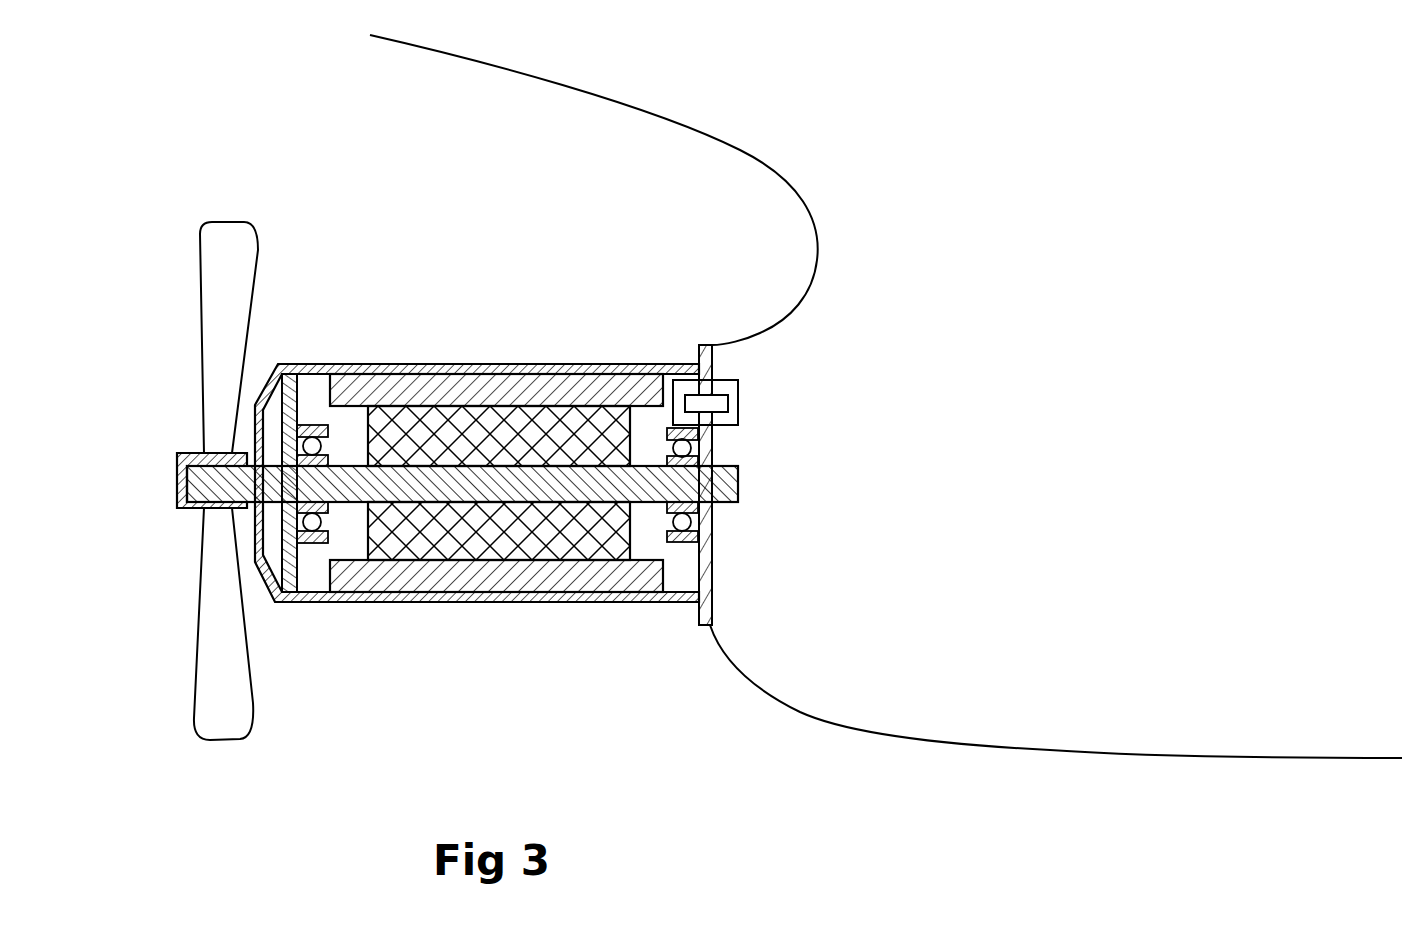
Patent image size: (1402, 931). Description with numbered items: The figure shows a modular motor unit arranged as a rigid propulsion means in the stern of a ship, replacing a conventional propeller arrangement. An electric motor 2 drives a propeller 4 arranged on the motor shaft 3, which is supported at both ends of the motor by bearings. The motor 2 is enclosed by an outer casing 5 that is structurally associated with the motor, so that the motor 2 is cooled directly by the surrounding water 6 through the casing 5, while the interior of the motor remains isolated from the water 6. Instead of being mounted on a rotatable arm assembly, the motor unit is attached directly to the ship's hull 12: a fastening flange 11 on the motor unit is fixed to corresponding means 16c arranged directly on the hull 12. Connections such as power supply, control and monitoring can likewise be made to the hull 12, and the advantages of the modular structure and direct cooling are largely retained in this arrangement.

The electric motor 2 is at (455, 545).
The motor shaft 3 is at (203, 448).
The propeller 4 is at (215, 690).
The outer casing 5 is at (560, 600).
The surrounding water 6 is at (594, 190).
The flange 11 is at (697, 608).
The ship's hull 12 is at (962, 697).
The flange means on hull 16c is at (720, 603).